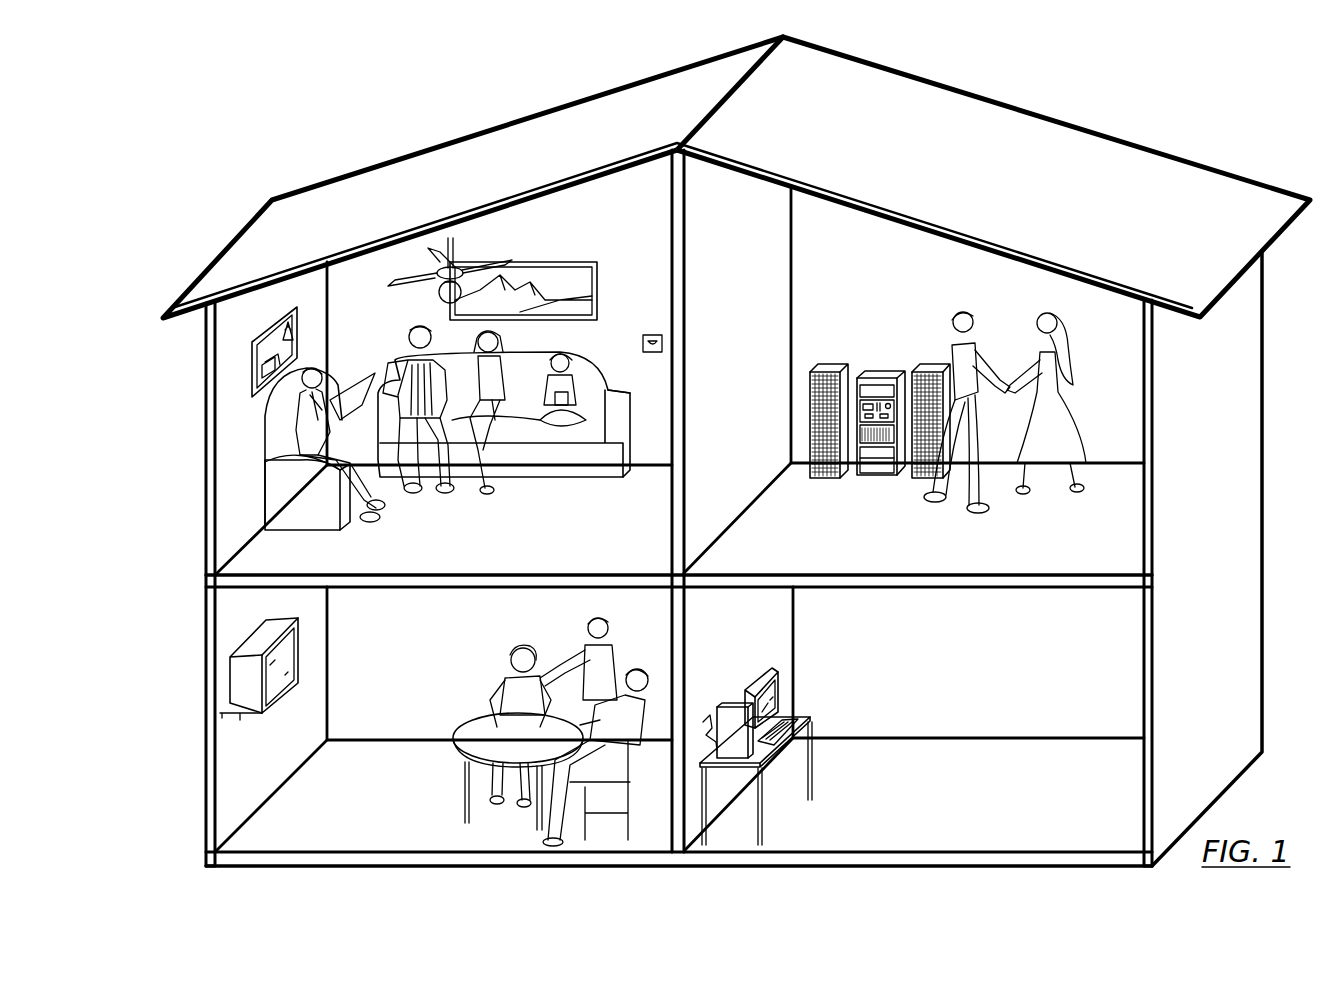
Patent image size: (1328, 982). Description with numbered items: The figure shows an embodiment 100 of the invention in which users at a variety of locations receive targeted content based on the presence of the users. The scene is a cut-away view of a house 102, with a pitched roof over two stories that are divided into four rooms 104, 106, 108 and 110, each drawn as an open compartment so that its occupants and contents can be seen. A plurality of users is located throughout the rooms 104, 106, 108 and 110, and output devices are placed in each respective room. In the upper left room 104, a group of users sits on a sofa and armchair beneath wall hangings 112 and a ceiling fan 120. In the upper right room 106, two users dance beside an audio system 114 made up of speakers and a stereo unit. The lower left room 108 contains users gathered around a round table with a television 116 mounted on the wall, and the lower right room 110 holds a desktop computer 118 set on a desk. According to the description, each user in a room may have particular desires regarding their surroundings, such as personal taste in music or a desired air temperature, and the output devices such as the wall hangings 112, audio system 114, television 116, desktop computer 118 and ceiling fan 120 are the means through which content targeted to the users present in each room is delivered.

The embodiment 100 is at (186, 112).
The house 102 is at (1010, 100).
The room 104 is at (212, 551).
The room 106 is at (1152, 531).
The room 108 is at (212, 823).
The room 110 is at (1152, 786).
The wall hangings 112 is at (557, 262).
The audio system 114 is at (833, 365).
The television 116 is at (233, 681).
The desktop computer 118 is at (774, 699).
The ceiling fan 120 is at (456, 226).